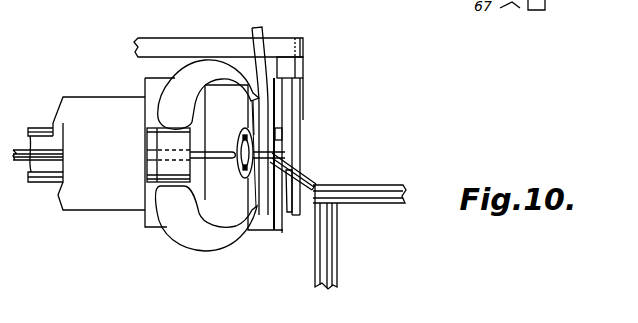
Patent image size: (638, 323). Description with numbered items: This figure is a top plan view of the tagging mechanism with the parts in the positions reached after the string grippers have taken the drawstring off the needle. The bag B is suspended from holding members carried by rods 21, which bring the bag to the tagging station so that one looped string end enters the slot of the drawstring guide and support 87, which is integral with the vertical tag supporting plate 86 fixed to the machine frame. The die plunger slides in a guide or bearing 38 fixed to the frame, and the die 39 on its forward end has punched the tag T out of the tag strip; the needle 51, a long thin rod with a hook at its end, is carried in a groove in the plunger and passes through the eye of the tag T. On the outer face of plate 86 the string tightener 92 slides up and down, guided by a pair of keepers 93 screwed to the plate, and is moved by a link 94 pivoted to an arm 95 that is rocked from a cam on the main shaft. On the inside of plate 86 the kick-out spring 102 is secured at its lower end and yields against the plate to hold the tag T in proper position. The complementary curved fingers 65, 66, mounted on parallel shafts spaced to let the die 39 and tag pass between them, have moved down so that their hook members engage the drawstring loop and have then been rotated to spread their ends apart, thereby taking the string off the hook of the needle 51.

The arm 95 is at (160, 45).
The link 94 is at (301, 68).
The guide or bearing 38 is at (88, 105).
The die 39 is at (157, 168).
The needle 51 is at (224, 161).
The curved finger 66 is at (209, 67).
The curved finger 65 is at (230, 246).
The tag T is at (236, 140).
The drawstring guide and support 87 is at (263, 43).
The string tightener 92 is at (282, 136).
The kick-out spring 102 is at (259, 133).
The keepers 93 is at (290, 150).
The vertical plate 86 is at (265, 232).
The bag B is at (380, 184).
The rods 21 is at (327, 255).